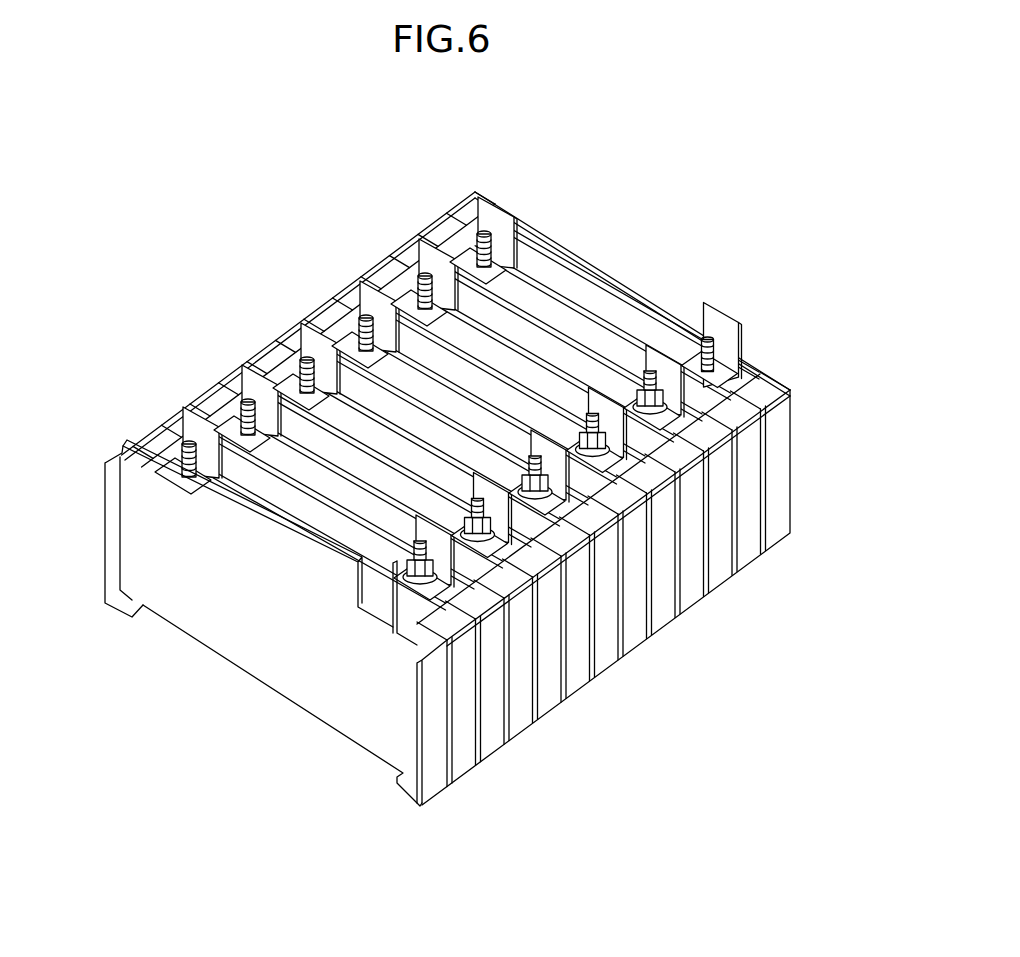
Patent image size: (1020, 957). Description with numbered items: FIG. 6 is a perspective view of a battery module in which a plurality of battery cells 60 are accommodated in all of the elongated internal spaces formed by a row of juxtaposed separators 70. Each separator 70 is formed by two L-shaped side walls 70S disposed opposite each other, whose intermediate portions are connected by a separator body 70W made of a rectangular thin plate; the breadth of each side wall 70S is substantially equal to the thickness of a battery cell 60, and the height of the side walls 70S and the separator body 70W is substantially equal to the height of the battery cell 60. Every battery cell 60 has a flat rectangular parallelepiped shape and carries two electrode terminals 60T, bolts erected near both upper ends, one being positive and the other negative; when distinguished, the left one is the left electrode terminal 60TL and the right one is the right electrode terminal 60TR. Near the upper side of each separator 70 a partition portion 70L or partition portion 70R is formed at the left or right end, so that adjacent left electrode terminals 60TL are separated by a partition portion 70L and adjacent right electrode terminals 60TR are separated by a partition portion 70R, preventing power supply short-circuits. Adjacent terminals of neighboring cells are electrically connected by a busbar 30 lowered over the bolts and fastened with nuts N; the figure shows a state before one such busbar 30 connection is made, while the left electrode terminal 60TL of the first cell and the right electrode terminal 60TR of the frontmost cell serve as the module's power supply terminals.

The busbar 30 is at (707, 510).
The battery cell 60 is at (468, 196).
The left electrode terminal 60TL is at (503, 212).
The right electrode terminal 60TR is at (683, 362).
The electrode terminal 60T is at (707, 337).
The separator 70 is at (780, 483).
The partition portion (left) 70L is at (483, 230).
The partition portion (right) 70R is at (720, 303).
The side wall 70S is at (115, 533).
The separator body 70W is at (322, 697).
The nut N is at (603, 440).